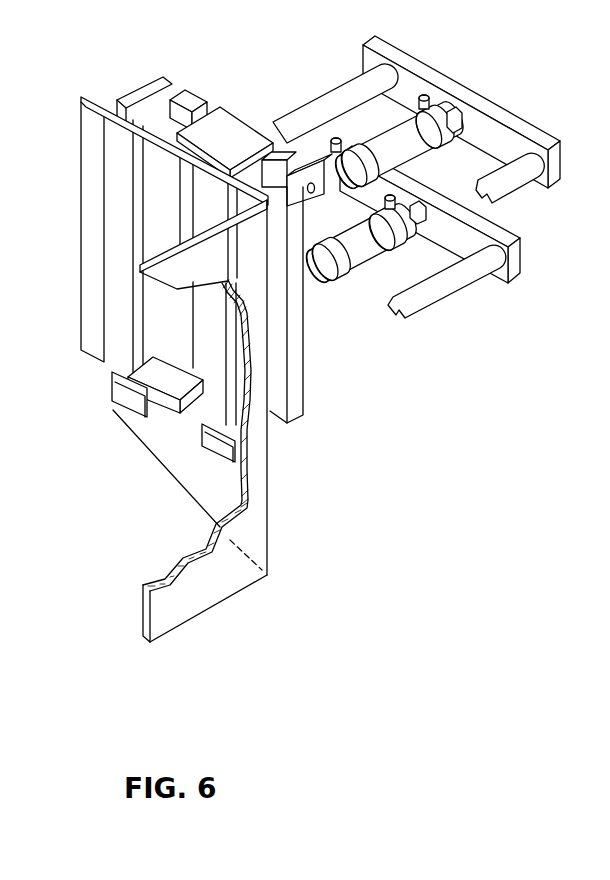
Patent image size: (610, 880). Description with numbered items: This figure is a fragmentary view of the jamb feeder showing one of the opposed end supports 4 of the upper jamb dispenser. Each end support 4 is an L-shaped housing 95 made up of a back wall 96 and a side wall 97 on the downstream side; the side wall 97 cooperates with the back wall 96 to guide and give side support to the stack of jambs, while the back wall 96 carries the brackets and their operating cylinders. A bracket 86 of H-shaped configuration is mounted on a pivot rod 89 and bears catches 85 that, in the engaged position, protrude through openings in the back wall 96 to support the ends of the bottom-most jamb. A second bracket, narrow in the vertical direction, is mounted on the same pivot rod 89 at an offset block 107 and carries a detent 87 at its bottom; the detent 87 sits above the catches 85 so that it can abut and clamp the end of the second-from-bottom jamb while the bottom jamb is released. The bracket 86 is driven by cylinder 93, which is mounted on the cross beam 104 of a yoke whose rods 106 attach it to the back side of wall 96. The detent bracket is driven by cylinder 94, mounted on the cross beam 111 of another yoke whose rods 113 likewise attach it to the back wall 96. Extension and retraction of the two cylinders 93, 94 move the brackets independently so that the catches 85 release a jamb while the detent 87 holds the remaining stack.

The end support 4 is at (100, 99).
The catch 85 is at (238, 444).
The bracket 86 is at (297, 317).
The detent 87 is at (167, 377).
The pivot rod 89 is at (180, 92).
The cylinder 93 is at (400, 160).
The cylinder 94 is at (368, 255).
The L-shaped housing 95 is at (268, 495).
The back wall 96 is at (90, 173).
The side wall 97 is at (227, 573).
The cross beam 104 is at (443, 80).
The rod 106 is at (333, 96).
The offset block 107 is at (230, 151).
The cross beam 111 is at (500, 235).
The rod 113 is at (434, 297).